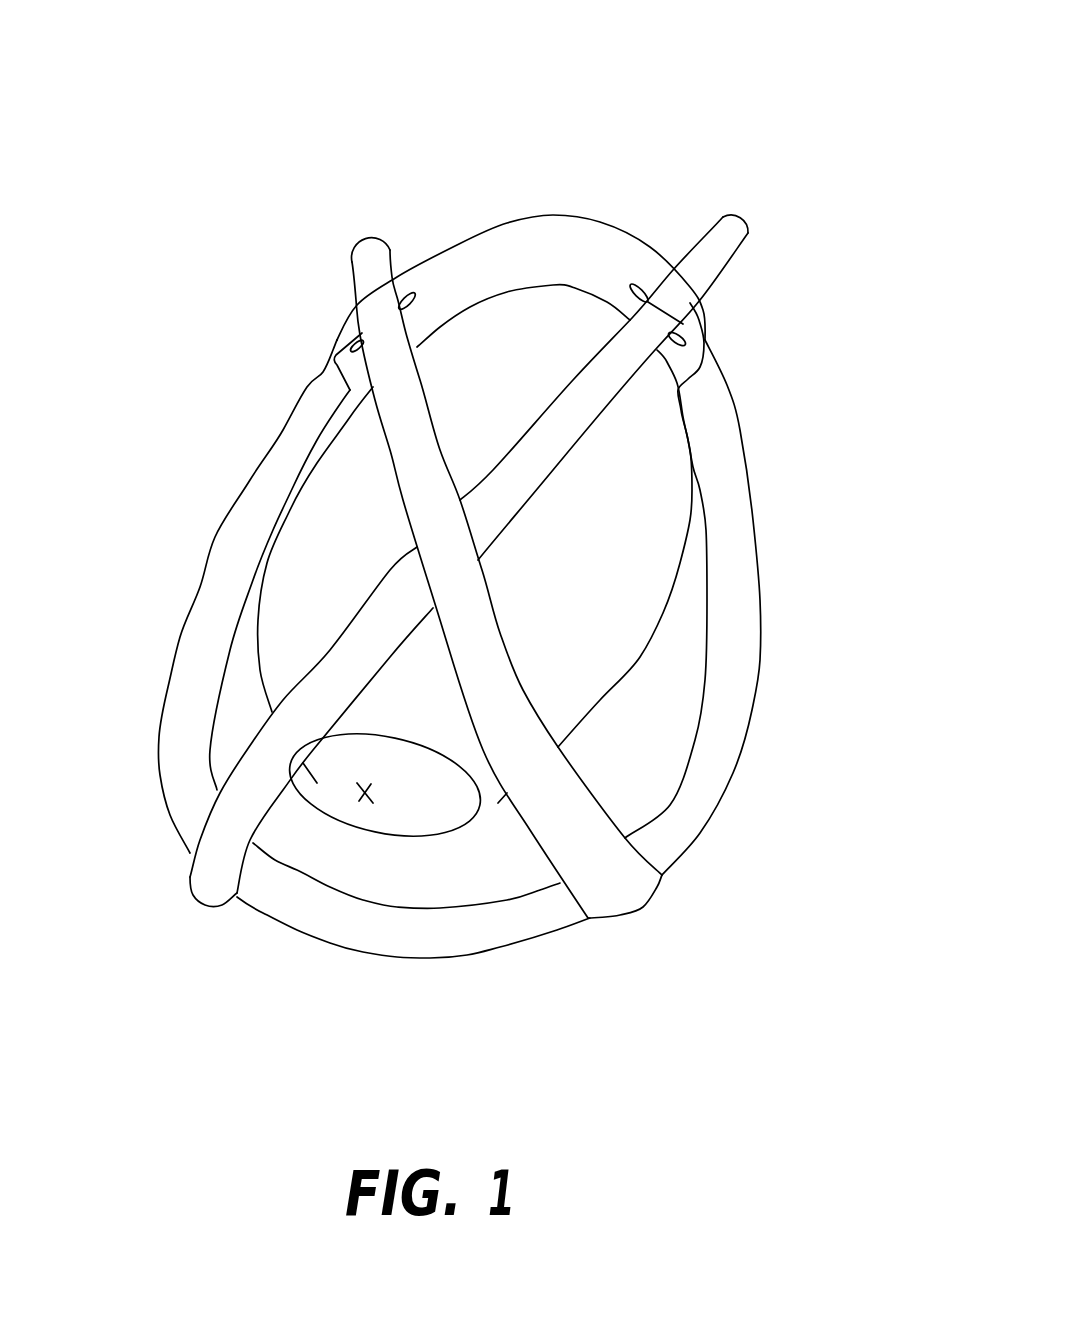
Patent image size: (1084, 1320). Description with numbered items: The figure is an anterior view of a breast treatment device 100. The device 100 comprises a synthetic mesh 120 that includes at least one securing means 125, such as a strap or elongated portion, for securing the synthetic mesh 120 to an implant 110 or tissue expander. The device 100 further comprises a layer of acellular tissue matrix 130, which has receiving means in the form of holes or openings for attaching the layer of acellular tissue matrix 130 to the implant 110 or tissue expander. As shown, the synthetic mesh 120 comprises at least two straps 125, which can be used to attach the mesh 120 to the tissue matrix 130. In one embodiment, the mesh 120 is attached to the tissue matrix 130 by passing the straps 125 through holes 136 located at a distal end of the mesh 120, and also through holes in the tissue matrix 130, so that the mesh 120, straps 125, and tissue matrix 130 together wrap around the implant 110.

The breast treatment device 100 is at (136, 44).
The implant 110 is at (443, 835).
The synthetic mesh 120 is at (758, 662).
The securing means 125 is at (720, 210).
The layer of acellular tissue matrix 130 is at (665, 478).
The holes 136 is at (343, 347).